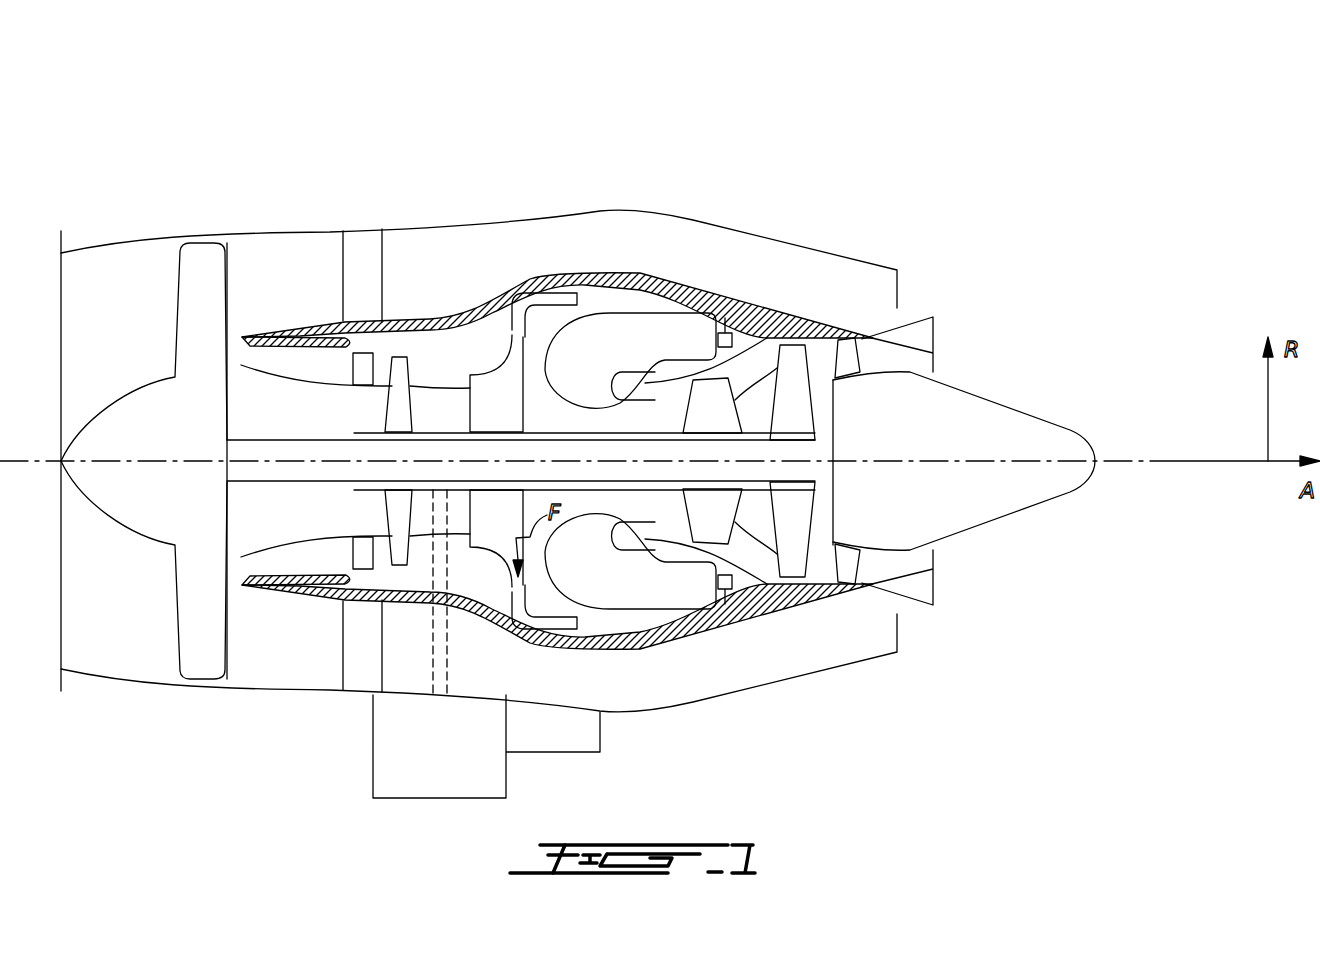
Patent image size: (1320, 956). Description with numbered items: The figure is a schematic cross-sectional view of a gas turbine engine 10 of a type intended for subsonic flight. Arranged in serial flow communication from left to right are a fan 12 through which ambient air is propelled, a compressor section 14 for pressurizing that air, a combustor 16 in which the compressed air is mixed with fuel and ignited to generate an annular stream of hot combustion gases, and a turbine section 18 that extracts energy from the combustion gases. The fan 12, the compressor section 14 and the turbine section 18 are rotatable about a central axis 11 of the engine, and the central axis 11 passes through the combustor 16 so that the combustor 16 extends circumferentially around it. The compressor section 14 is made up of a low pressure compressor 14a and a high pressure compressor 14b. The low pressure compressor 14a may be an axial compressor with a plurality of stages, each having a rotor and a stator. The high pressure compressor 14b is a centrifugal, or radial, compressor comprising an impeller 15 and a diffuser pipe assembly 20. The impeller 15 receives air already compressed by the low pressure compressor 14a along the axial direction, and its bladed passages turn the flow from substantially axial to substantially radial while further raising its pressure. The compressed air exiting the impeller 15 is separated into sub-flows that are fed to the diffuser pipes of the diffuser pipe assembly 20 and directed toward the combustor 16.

The gas turbine engine 10 is at (778, 146).
The central axis 11 is at (1132, 460).
The fan 12 is at (197, 603).
The compressor section 14 is at (430, 366).
The low pressure compressor 14a is at (363, 518).
The high pressure compressor 14b is at (563, 268).
The impeller 15 is at (487, 523).
The combustor 16 is at (632, 330).
The turbine section 18 is at (753, 520).
The diffuser pipe assembly 20 is at (558, 645).